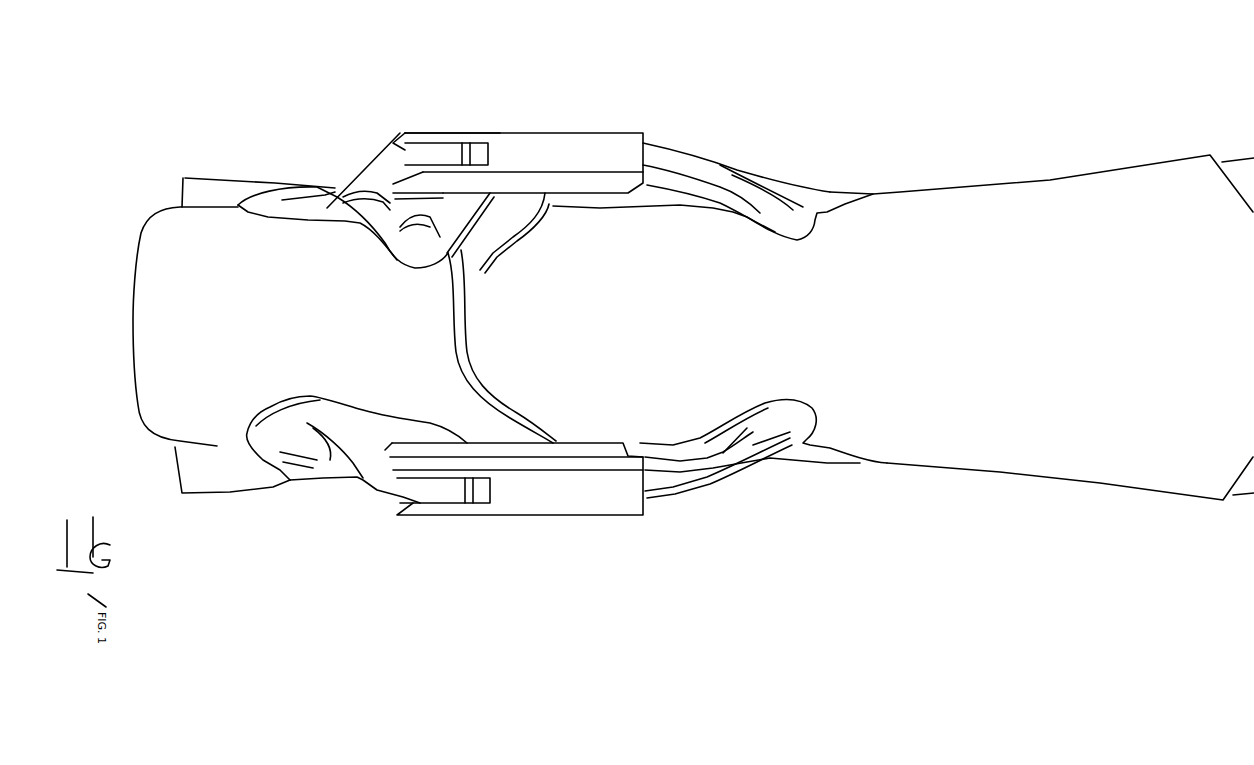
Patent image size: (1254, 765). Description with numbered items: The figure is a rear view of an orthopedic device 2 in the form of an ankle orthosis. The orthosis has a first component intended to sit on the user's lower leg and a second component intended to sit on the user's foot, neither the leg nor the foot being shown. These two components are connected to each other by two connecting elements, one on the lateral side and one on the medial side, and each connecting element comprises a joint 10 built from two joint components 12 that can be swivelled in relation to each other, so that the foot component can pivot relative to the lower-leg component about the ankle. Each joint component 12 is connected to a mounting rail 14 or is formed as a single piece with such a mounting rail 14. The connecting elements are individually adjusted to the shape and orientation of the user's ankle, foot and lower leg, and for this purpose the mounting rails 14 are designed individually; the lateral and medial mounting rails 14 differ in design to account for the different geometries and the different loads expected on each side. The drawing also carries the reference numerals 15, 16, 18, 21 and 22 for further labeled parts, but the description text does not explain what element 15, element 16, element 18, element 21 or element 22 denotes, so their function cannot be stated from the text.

The orthopedic device 2 is at (590, 540).
The joint 10 is at (207, 247).
The joint component 12 is at (565, 150).
The mounting rail 14 is at (707, 180).
The arm 15 is at (960, 433).
The upper surface 16 is at (510, 110).
The button 18 is at (460, 152).
The end portion 21 is at (397, 136).
The lower button 22 is at (442, 490).